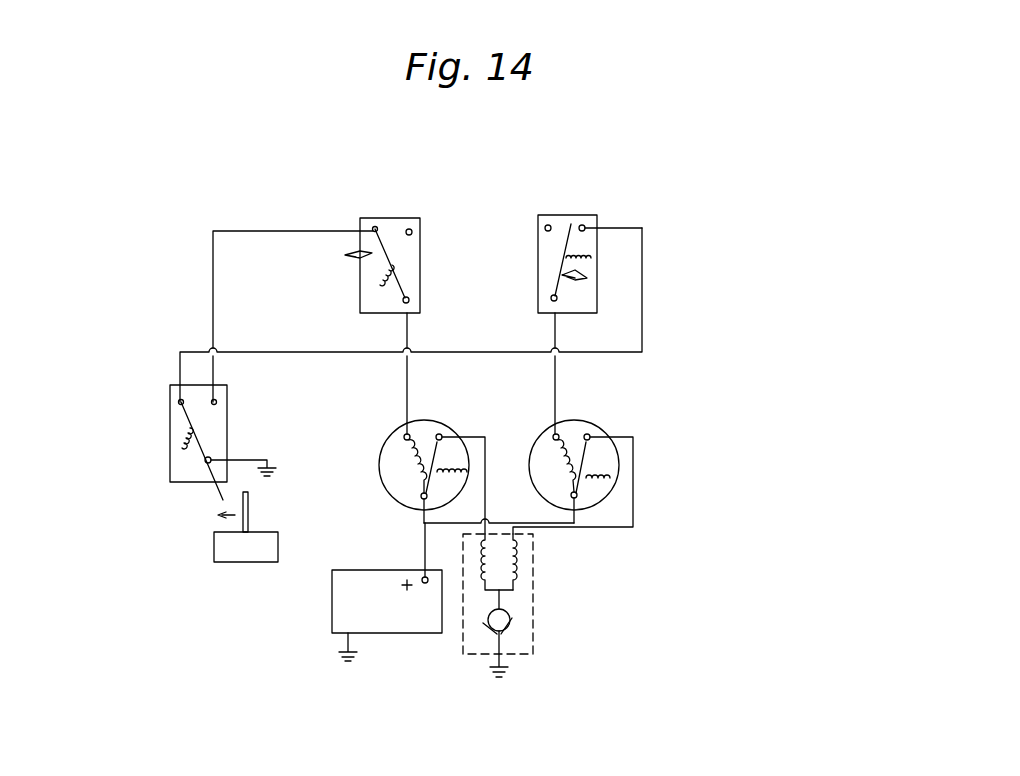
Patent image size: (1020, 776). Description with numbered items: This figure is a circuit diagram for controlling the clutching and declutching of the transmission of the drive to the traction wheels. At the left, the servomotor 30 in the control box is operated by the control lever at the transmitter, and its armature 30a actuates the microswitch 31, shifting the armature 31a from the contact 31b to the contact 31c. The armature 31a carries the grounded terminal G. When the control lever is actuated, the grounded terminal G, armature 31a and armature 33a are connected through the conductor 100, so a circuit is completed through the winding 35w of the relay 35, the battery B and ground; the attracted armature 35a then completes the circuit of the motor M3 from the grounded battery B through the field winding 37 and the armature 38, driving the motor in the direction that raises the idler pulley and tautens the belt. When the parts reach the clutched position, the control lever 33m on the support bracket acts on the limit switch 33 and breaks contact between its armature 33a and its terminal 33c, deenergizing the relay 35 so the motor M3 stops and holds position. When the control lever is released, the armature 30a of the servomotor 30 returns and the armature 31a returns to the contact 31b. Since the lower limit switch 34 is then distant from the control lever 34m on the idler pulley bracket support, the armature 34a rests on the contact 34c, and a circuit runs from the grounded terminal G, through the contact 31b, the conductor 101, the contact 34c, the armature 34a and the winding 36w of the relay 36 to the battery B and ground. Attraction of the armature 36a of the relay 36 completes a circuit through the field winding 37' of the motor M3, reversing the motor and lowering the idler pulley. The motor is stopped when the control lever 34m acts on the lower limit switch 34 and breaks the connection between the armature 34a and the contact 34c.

The conductor 100 is at (236, 230).
The conductor 101 is at (265, 350).
The limit switch 33 is at (402, 227).
The armature 33a is at (400, 275).
The terminal 33c is at (373, 226).
The control lever 33m is at (345, 255).
The limit switch 34 is at (546, 213).
The armature 34a is at (566, 250).
The contact 34c is at (585, 228).
The control lever 34m is at (587, 278).
The microswitch 31 is at (190, 468).
The armature 31a is at (207, 443).
The contact 31b is at (178, 402).
The contact 31c is at (218, 400).
The servomotor 30 is at (242, 540).
The armature 30a is at (248, 515).
The grounded terminal G is at (276, 466).
The relay 35 is at (426, 425).
The armature 35a is at (440, 457).
The winding 35w is at (405, 448).
The relay 36 is at (575, 427).
The armature 36a is at (600, 480).
The winding 36w is at (556, 462).
The battery B is at (360, 580).
The field winding 37 is at (469, 607).
The field winding 37' is at (549, 562).
The armature 38 is at (512, 618).
The motor M3 is at (525, 657).